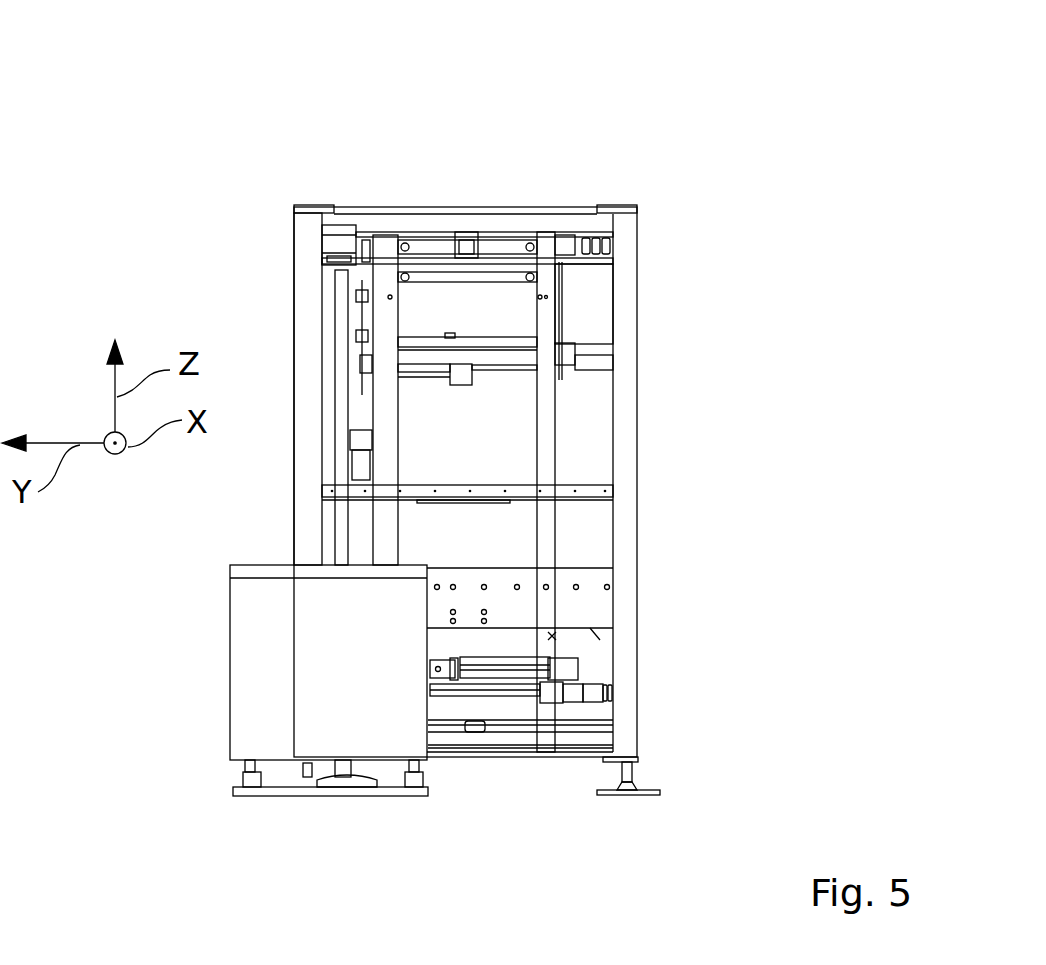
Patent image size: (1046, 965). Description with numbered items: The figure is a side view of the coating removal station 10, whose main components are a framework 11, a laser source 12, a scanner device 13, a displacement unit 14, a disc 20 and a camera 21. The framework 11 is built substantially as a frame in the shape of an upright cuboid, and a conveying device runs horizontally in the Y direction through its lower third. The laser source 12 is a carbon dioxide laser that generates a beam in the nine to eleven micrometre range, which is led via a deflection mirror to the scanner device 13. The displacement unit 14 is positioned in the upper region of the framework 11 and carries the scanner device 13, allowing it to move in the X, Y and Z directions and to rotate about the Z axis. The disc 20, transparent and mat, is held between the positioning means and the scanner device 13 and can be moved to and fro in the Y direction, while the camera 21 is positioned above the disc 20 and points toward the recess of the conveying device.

The coating removal station 10 is at (632, 168).
The framework 11 is at (303, 248).
The laser source 12 is at (250, 648).
The scanner device 13 is at (473, 372).
The displacement unit 14 is at (584, 300).
The disc 20 is at (520, 490).
The camera 21 is at (468, 247).